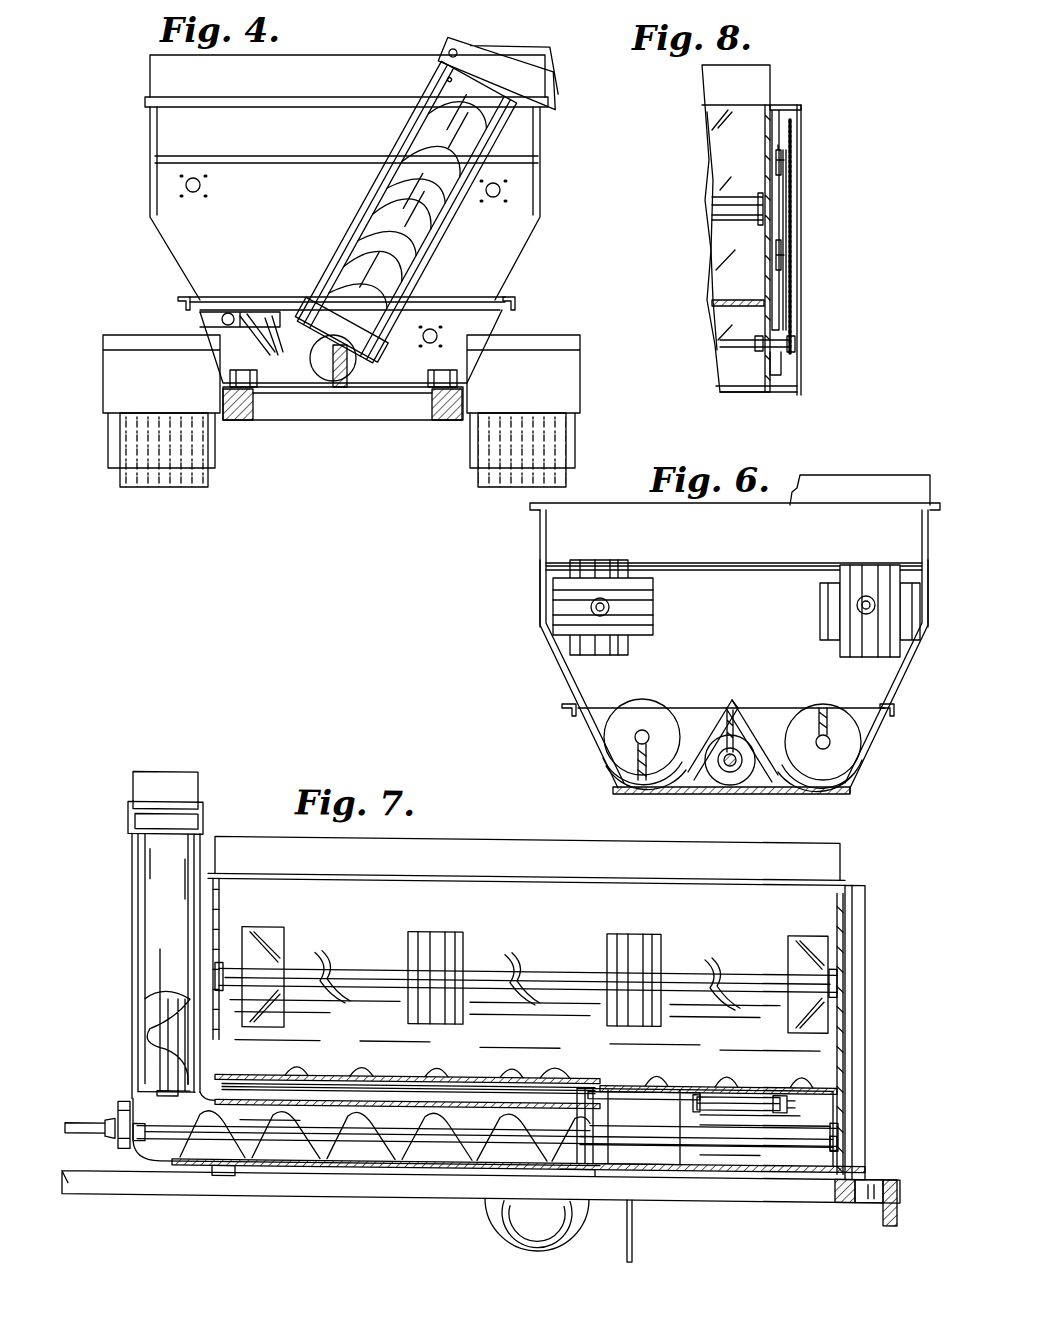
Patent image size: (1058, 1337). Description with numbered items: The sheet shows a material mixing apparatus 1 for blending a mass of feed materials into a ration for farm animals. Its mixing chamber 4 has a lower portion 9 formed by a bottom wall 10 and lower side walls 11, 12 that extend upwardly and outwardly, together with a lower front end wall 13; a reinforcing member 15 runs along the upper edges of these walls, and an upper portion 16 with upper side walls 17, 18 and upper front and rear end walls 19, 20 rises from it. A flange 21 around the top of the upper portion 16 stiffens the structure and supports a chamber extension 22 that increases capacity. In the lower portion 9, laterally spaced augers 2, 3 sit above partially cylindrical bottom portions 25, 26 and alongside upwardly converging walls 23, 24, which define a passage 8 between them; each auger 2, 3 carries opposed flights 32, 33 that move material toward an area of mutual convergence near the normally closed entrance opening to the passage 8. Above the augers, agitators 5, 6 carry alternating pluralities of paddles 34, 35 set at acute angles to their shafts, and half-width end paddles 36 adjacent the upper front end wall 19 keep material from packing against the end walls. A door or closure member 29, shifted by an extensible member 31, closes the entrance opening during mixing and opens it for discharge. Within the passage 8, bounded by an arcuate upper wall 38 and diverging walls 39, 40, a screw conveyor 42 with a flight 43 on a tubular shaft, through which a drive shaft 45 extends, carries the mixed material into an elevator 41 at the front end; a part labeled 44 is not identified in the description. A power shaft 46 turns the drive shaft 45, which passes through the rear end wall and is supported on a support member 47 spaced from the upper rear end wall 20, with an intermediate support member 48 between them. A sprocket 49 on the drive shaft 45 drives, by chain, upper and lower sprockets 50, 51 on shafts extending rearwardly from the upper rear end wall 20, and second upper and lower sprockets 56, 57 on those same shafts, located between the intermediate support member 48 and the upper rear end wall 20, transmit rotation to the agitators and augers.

In FIG. 4, the material mixing apparatus 1 is at (562, 226).
In FIG. 6, the material mixing apparatus 1 is at (830, 456).
In FIG. 7, the material mixing apparatus 1 is at (505, 832).
In FIG. 6, the auger 2 is at (628, 700).
In FIG. 6, the auger 3 is at (815, 702).
In FIG. 6, the mixing chamber 4 is at (738, 584).
In FIG. 7, the mixing chamber 4 is at (538, 888).
In FIG. 6, the agitator 5 is at (653, 608).
In FIG. 6, the agitator 6 is at (820, 617).
In FIG. 7, the agitator 6 is at (382, 972).
In FIG. 7, the passage 8 is at (458, 1097).
In FIG. 6, the lower portion 9 is at (720, 718).
In FIG. 7, the lower portion 9 is at (818, 1066).
In FIG. 6, the bottom wall 10 is at (765, 792).
In FIG. 7, the bottom wall 10 is at (748, 1162).
In FIG. 6, the lower side wall 11 is at (603, 770).
In FIG. 6, the lower side wall 12 is at (855, 760).
In FIG. 4, the lower front end wall 13 is at (490, 330).
In FIG. 4, the reinforcing member 15 is at (182, 295).
In FIG. 6, the reinforcing member 15 is at (562, 705).
In FIG. 4, the upper portion 16 is at (143, 144).
In FIG. 6, the upper portion 16 is at (534, 547).
In FIG. 7, the upper portion 16 is at (837, 887).
In FIG. 6, the upper side wall 17 is at (540, 585).
In FIG. 6, the upper side wall 18 is at (930, 546).
In FIG. 7, the upper side wall 18 is at (405, 876).
In FIG. 4, the upper front end wall 19 is at (510, 238).
In FIG. 7, the upper front end wall 19 is at (220, 907).
In FIG. 8, the upper rear end wall 20 is at (764, 118).
In FIG. 7, the upper rear end wall 20 is at (837, 920).
In FIG. 6, the flange 21 is at (530, 507).
In FIG. 4, the chamber extension 22 is at (346, 70).
In FIG. 6, the chamber extension 22 is at (880, 488).
In FIG. 7, the chamber extension 22 is at (270, 847).
In FIG. 6, the upwardly converging wall 23 is at (712, 710).
In FIG. 6, the upwardly converging wall 24 is at (790, 720).
In FIG. 6, the bottom portion 25 is at (645, 775).
In FIG. 6, the bottom portion 26 is at (818, 782).
In FIG. 7, the door or closure member 29 is at (642, 1107).
In FIG. 7, the extensible member 31 is at (725, 1107).
In FIG. 7, the flight 32 is at (505, 1080).
In FIG. 7, the flight 33 is at (650, 1082).
In FIG. 7, the paddle 34 is at (712, 962).
In FIG. 7, the paddle 35 is at (633, 934).
In FIG. 7, the end paddle 36 is at (263, 927).
In FIG. 7, the upper wall 38 is at (300, 1147).
In FIG. 6, the diverging wall 39 is at (677, 778).
In FIG. 6, the diverging wall 40 is at (795, 785).
In FIG. 4, the elevator 41 is at (352, 205).
In FIG. 7, the elevator 41 is at (133, 892).
In FIG. 6, the screw conveyor 42 is at (742, 785).
In FIG. 7, the screw conveyor 42 is at (440, 1152).
In FIG. 7, the flight 43 is at (385, 1157).
In FIG. 6, the bearing housing 44 is at (720, 785).
In FIG. 8, the drive shaft 45 is at (730, 346).
In FIG. 6, the drive shaft 45 is at (745, 760).
In FIG. 7, the drive shaft 45 is at (690, 1147).
In FIG. 7, the power shaft 46 is at (78, 1127).
In FIG. 8, the support member 47 is at (801, 130).
In FIG. 8, the intermediate support member 48 is at (796, 112).
In FIG. 8, the sprocket 49 is at (796, 347).
In FIG. 8, the upper sprocket 50 is at (797, 170).
In FIG. 8, the lower sprocket 51 is at (790, 278).
In FIG. 8, the second upper sprocket 56 is at (776, 158).
In FIG. 8, the second lower sprocket 57 is at (776, 260).